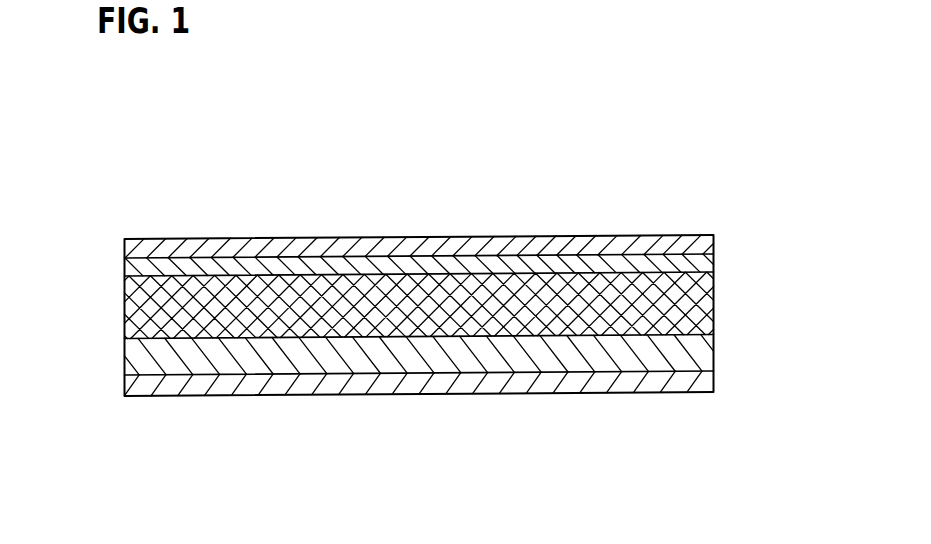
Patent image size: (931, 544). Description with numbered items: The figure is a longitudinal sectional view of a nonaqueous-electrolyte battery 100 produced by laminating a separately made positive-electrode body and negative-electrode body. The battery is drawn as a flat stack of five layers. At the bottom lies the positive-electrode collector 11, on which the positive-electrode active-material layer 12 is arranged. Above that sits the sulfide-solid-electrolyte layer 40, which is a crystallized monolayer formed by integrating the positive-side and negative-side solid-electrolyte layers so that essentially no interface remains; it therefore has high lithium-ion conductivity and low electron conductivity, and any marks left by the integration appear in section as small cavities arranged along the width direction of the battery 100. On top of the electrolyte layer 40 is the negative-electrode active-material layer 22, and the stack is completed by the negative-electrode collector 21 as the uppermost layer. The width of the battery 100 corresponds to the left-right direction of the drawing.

The nonaqueous-electrolyte battery 100 is at (507, 197).
The negative-electrode collector 21 is at (152, 239).
The negative-electrode active-material layer 22 is at (124, 265).
The sulfide-solid-electrolyte layer 40 is at (714, 300).
The positive-electrode active-material layer 12 is at (124, 360).
The positive-electrode collector 11 is at (124, 388).